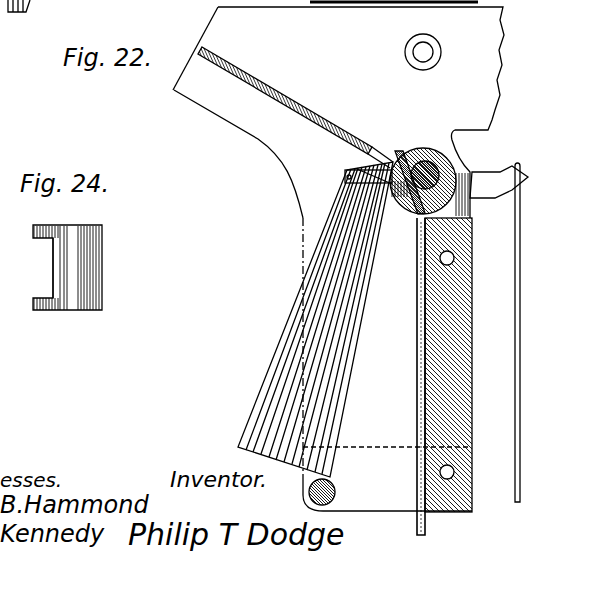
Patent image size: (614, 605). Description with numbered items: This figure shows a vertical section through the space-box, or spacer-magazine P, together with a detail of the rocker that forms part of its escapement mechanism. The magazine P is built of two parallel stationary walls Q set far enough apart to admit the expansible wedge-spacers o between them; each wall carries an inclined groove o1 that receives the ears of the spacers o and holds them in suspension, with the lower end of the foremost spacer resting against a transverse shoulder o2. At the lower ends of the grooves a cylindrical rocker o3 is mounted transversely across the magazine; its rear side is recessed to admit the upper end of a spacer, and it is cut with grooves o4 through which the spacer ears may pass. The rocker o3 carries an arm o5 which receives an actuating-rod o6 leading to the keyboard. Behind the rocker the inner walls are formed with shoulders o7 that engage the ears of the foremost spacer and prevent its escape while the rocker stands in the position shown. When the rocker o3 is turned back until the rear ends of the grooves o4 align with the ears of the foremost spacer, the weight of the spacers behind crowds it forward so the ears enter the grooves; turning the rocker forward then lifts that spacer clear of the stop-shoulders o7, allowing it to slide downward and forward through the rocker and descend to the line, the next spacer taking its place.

In FIG. 22, the stationary wall Q is at (338, 112).
In FIG. 22, the inclined groove o1 is at (244, 70).
In FIG. 22, the expansible wedge-spacer o is at (300, 367).
In FIG. 22, the transverse shoulder o2 is at (313, 503).
In FIG. 22, the cylindrical rocker o3 is at (425, 147).
In FIG. 24, the cylindrical rocker o3 is at (78, 272).
In FIG. 22, the groove o4 is at (397, 152).
In FIG. 24, the groove o4 is at (53, 297).
In FIG. 22, the arm o5 is at (481, 182).
In FIG. 22, the actuating-rod o6 is at (513, 287).
In FIG. 22, the shoulder o7 is at (395, 151).
In FIG. 22, the magazine P is at (372, 365).